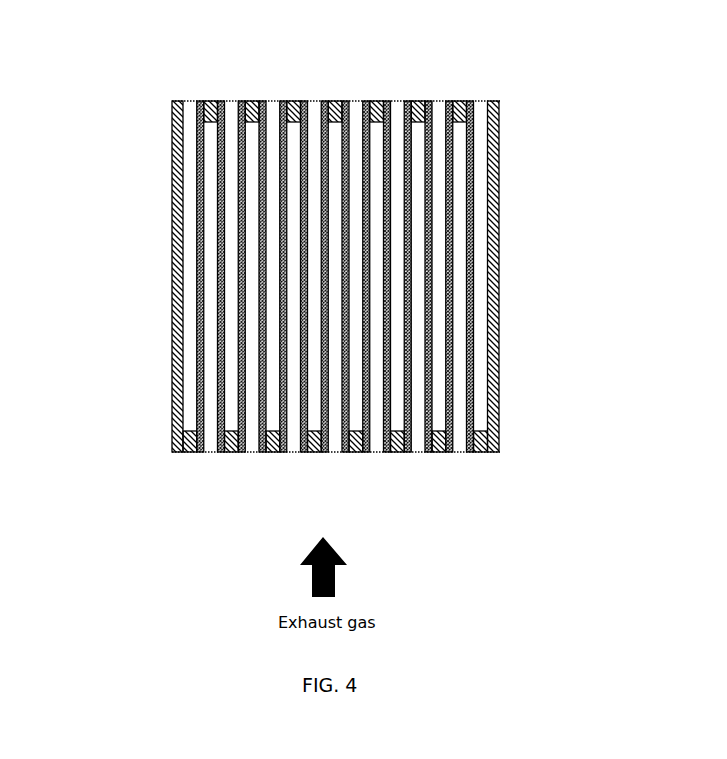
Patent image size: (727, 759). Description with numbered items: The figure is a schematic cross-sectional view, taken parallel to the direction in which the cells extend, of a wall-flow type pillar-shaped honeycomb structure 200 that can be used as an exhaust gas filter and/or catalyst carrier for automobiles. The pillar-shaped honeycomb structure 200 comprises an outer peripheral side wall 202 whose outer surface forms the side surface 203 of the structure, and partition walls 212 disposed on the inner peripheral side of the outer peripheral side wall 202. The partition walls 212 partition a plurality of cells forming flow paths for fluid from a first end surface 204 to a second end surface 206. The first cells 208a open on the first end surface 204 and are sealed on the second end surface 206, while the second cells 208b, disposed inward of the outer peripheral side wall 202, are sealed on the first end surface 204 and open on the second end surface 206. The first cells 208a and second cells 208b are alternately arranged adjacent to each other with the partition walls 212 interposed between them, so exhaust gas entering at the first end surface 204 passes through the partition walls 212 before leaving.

The pillar-shaped honeycomb structure 200 is at (333, 272).
The outer peripheral side wall 202 is at (333, 282).
The side surface 203 is at (172, 140).
The first end surface 204 is at (449, 464).
The second end surface 206 is at (198, 94).
The first cells 208a is at (255, 453).
The second cells 208b is at (236, 100).
The partition walls 212 is at (200, 235).